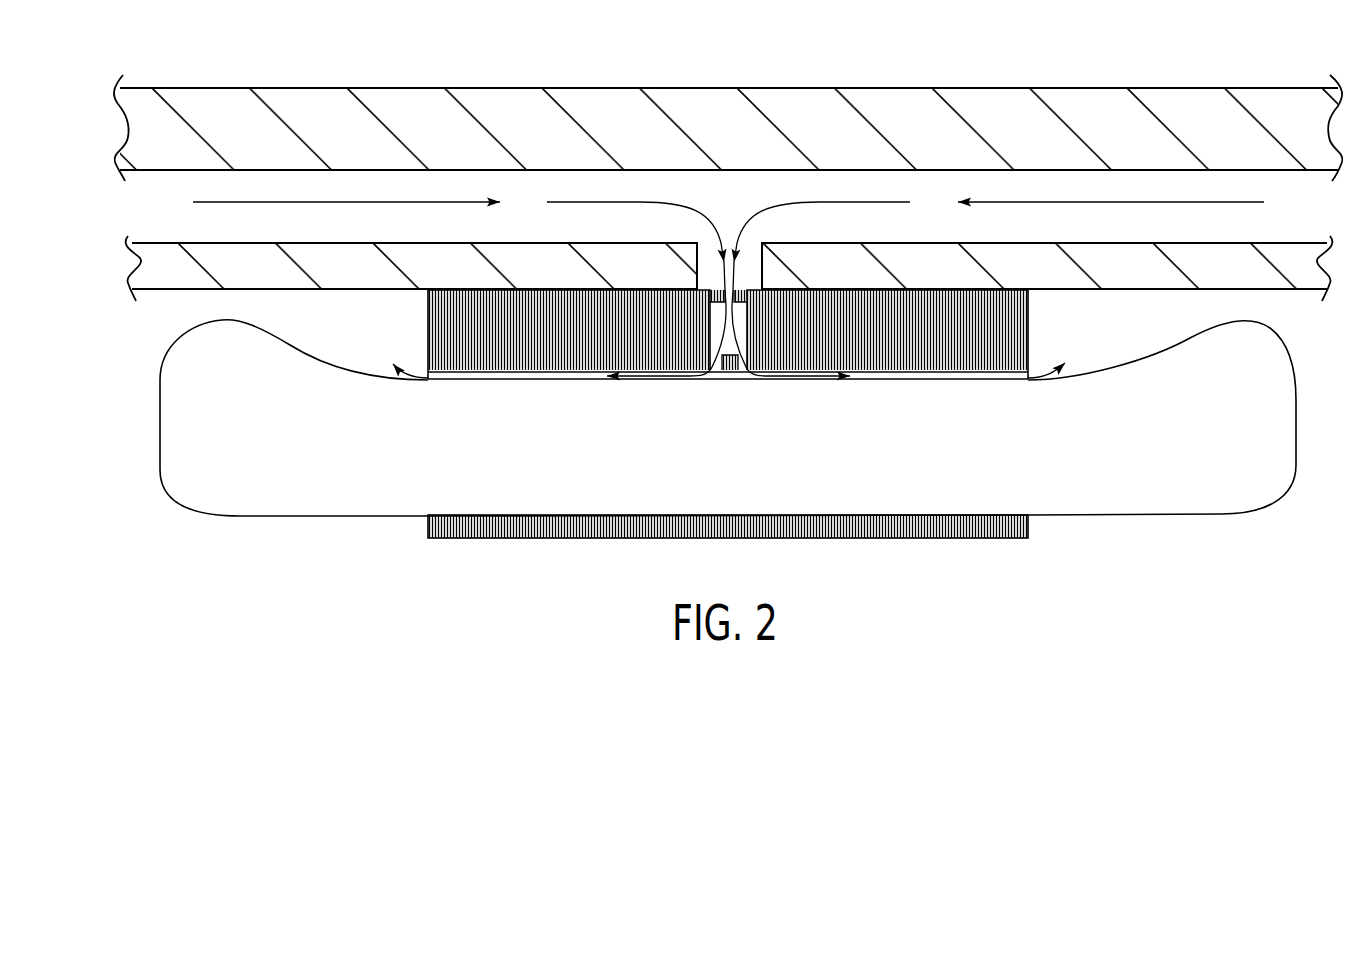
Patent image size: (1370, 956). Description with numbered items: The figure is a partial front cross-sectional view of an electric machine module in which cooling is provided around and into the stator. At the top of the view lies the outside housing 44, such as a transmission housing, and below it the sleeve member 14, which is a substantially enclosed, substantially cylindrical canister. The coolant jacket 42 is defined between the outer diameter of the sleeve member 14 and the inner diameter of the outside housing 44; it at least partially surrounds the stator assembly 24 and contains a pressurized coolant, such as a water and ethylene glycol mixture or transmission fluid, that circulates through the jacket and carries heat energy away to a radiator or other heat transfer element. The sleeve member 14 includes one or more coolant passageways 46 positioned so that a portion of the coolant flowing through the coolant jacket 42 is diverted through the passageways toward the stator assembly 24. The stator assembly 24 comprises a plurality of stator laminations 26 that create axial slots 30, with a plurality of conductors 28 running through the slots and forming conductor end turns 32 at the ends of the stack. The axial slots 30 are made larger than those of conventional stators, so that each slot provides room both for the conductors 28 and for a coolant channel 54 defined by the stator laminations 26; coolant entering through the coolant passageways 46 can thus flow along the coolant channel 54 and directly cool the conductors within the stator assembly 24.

The sleeve member 14 is at (166, 291).
The stator assembly 24 is at (156, 464).
The stator laminations 26 is at (455, 520).
The conductors 28 is at (1012, 478).
The axial slots 30 is at (1036, 368).
The conductor end turns 32 is at (1245, 427).
The coolant jacket 42 is at (930, 195).
The outside housing 44 is at (320, 113).
The coolant passageways 46 is at (730, 232).
The coolant channel 54 is at (588, 380).